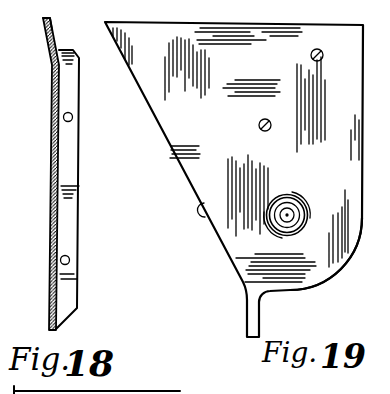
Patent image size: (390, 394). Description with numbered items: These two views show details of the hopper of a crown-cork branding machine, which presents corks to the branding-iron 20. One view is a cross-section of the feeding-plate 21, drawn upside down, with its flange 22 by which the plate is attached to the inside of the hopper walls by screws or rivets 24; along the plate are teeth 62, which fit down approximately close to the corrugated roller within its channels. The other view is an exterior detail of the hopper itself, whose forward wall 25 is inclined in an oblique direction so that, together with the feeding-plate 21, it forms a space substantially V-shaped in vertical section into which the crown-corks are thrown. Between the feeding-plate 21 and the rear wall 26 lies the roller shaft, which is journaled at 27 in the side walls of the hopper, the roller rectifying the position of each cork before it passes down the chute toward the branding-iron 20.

In FIG. 18, the branding-iron 20 is at (130, 389).
In FIG. 18, the feeding-plate 21 is at (50, 209).
In FIG. 18, the flange 22 is at (78, 187).
In FIG. 18, the screws or rivets 24 is at (78, 117).
In FIG. 19, the forward wall 25 is at (163, 151).
In FIG. 19, the rear wall 26 is at (353, 257).
In FIG. 19, the journal 27 is at (300, 198).
In FIG. 18, the teeth 62 is at (55, 39).